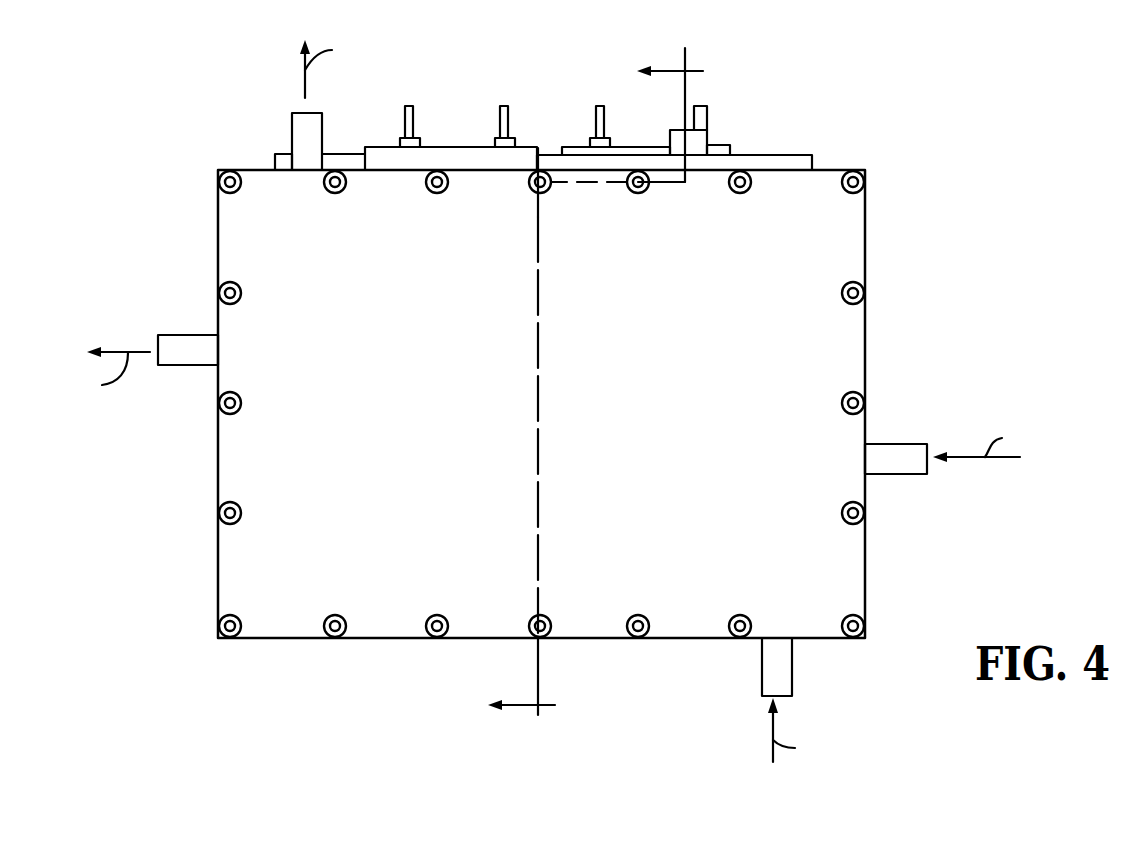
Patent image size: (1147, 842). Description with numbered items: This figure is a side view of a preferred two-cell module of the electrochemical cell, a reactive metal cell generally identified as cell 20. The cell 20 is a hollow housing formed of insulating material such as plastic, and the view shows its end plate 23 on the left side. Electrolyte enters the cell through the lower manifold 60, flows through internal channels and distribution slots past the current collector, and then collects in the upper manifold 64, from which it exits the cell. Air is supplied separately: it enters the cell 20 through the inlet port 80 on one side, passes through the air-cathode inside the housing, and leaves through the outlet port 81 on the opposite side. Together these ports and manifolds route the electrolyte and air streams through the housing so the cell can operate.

The reactive metal cell 20 is at (908, 134).
The end plate (left side) 23 is at (388, 523).
The manifold 60 is at (792, 672).
The manifold 64 is at (292, 130).
The inlet port 80 is at (882, 444).
The outlet port 81 is at (170, 335).